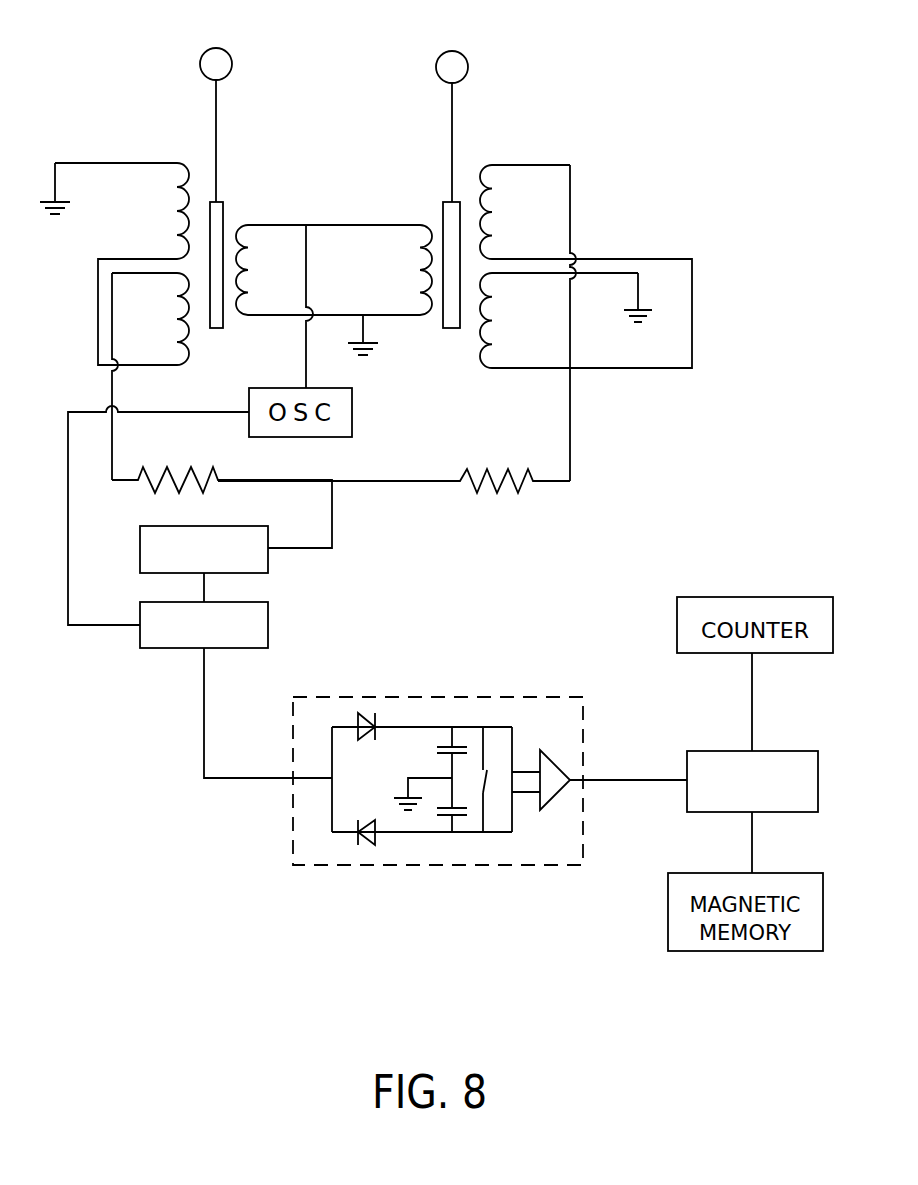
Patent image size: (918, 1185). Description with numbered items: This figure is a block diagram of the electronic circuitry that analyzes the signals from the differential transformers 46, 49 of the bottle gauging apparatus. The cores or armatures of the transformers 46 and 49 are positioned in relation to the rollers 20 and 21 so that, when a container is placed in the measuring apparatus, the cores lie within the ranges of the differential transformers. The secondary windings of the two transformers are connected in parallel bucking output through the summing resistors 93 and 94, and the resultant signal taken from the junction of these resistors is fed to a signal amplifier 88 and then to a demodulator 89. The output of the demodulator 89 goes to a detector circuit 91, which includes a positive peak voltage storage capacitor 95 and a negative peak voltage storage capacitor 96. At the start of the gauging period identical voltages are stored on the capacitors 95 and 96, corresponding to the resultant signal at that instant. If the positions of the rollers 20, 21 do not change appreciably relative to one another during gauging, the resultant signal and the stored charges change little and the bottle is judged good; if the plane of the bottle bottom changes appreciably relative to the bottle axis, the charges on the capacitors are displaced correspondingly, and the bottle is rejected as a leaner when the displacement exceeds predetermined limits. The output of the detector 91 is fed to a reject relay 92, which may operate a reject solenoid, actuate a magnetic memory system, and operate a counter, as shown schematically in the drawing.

The roller 20 is at (201, 58).
The roller 21 is at (438, 57).
The differential transformer 46 is at (260, 158).
The differential transformer 49 is at (476, 150).
The signal amplifier 88 is at (140, 527).
The demodulator 89 is at (140, 603).
The detector circuit 91 is at (526, 694).
The reject relay 92 is at (684, 810).
The summing resistor 93 is at (147, 474).
The summing resistor 94 is at (496, 489).
The positive peak voltage storage capacitor 95 is at (444, 740).
The negative peak voltage storage capacitor 96 is at (446, 817).